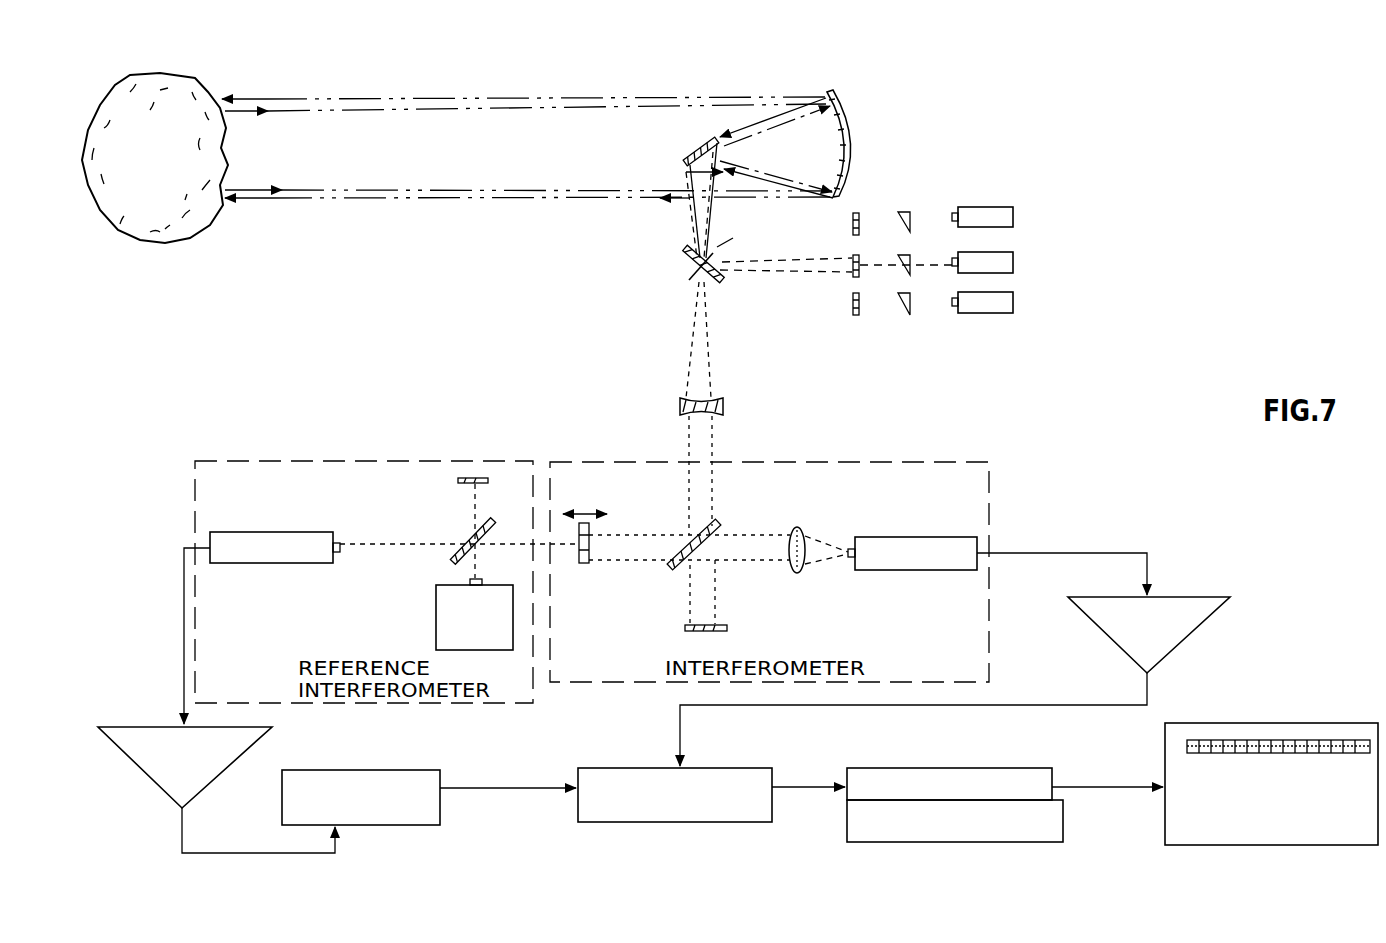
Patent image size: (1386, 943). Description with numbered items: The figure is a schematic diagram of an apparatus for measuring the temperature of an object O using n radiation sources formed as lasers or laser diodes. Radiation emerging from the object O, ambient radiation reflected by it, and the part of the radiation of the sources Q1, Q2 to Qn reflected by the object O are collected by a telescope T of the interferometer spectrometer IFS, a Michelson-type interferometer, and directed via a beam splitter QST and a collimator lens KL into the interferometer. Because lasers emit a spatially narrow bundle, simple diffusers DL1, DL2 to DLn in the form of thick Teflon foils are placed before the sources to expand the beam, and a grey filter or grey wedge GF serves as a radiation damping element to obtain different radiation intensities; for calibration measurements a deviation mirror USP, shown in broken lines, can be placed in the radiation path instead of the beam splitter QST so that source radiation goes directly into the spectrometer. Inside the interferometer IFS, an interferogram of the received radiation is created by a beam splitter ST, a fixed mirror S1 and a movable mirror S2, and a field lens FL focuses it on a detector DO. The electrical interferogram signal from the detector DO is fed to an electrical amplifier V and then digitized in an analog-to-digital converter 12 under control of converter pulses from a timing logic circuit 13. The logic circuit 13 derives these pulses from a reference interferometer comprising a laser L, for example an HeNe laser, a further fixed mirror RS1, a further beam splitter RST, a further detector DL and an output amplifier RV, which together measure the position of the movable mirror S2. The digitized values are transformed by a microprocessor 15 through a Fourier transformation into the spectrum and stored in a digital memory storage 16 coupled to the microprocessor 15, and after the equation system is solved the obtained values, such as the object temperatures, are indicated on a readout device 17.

The object O is at (176, 73).
The telescope T is at (830, 92).
The beam splitter QST is at (686, 254).
The deviation mirror USP is at (684, 276).
The diffuser DL1 is at (854, 223).
The diffuser DL2 is at (854, 277).
The diffuser DLn is at (856, 315).
The grey filter or grey wedge GF is at (908, 310).
The radiation source Q1 is at (1013, 217).
The radiation source Q2 is at (1013, 263).
The radiation source Qn is at (1013, 303).
The collimator lens KL is at (723, 410).
The further fixed mirror RS1 is at (458, 481).
The further beam splitter RST is at (452, 555).
The laser L is at (436, 606).
The further detector DL is at (260, 563).
The detector DO is at (930, 570).
The movable mirror S2 is at (583, 563).
The beam splitter ST is at (718, 528).
The field lens FL is at (828, 516).
The fixed mirror S1 is at (727, 628).
The interferometer spectrometer IFS is at (628, 684).
The electrical amplifier V is at (1176, 640).
The output amplifier RV is at (146, 779).
The timing logic circuit 13 is at (407, 818).
The analog-to-digital converter 12 is at (657, 822).
The microprocessor 15 is at (942, 746).
The digital memory storage 16 is at (952, 842).
The readout device 17 is at (1268, 723).